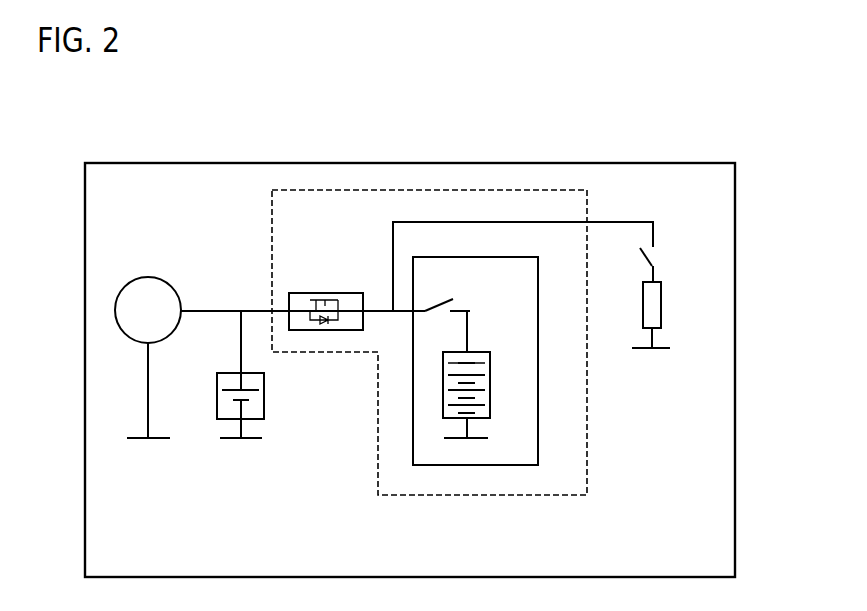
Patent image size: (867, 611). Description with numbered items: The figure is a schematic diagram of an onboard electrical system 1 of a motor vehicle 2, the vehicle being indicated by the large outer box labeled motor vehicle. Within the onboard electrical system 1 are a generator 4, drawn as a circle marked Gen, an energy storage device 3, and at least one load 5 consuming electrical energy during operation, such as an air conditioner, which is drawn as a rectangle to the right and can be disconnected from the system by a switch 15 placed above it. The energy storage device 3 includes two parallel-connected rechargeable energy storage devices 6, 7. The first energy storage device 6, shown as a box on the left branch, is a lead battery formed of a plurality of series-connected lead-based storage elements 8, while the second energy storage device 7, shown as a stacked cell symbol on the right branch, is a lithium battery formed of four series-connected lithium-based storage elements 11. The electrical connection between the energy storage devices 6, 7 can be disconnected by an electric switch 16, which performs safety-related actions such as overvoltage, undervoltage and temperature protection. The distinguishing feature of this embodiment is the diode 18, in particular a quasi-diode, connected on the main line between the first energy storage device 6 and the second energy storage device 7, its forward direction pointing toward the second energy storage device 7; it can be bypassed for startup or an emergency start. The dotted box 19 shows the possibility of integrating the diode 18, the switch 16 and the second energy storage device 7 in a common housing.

The onboard electrical system 1 is at (166, 236).
The motor vehicle 2 is at (511, 163).
The energy storage device 3 is at (323, 452).
The generator 4 is at (172, 286).
The load 5 is at (661, 304).
The first energy storage device 6 is at (225, 373).
The second energy storage device 7 is at (492, 400).
The lead-based storage element 8 is at (216, 390).
The lithium-based storage element 11 is at (490, 362).
The switch 15 is at (641, 250).
The electric switch 16 is at (437, 300).
The diode 18 is at (322, 293).
The dotted box 19 is at (587, 455).